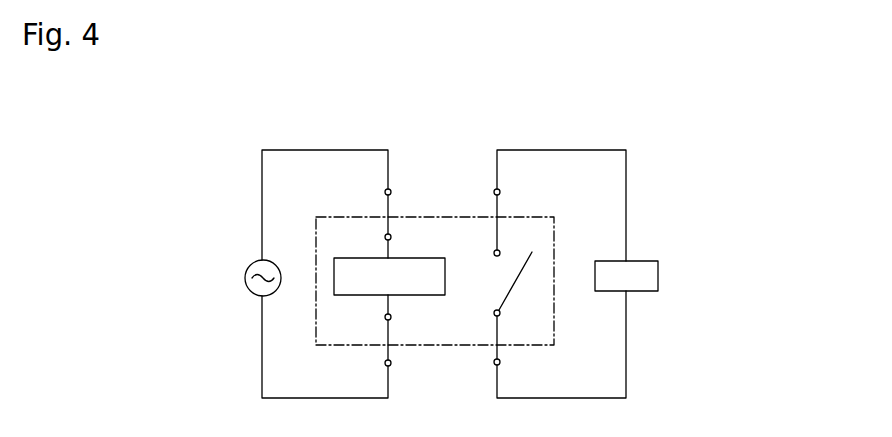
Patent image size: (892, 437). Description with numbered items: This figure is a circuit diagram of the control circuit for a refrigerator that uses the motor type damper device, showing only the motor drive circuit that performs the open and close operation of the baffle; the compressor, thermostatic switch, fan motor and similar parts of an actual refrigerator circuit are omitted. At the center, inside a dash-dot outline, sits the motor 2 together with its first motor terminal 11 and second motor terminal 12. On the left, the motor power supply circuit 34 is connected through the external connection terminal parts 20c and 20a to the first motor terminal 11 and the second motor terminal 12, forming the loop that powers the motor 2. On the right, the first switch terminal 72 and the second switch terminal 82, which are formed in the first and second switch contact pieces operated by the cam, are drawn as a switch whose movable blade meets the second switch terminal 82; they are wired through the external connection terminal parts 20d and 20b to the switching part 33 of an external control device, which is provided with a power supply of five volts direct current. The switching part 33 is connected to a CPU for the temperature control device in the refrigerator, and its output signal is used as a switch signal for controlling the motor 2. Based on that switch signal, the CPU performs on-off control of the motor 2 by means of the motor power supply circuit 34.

The motor 2 is at (351, 296).
The first motor terminal 11 is at (391, 237).
The second motor terminal 12 is at (391, 317).
The external connection terminal part 20a is at (390, 366).
The external connection terminal part 20b is at (494, 362).
The external connection terminal part 20c is at (388, 189).
The external connection terminal part 20d is at (494, 192).
The switching part 33 is at (658, 271).
The motor power supply circuit 34 is at (245, 278).
The first switch terminal 72 is at (494, 253).
The second switch terminal 82 is at (494, 312).